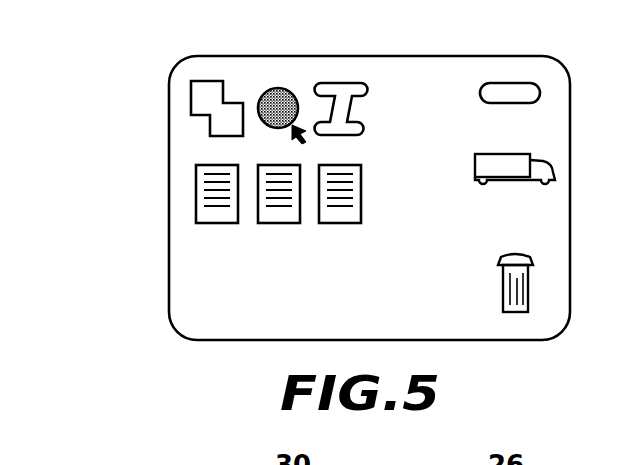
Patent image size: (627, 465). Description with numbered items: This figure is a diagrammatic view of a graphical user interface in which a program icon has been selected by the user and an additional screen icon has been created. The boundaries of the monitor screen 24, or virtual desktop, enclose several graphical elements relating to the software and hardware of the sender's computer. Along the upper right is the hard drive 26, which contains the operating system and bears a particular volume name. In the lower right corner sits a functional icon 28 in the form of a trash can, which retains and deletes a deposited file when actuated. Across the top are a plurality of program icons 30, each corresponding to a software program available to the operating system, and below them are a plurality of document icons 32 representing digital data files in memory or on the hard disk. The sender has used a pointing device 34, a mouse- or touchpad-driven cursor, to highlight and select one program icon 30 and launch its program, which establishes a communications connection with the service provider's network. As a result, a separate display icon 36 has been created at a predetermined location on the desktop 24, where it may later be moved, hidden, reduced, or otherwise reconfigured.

The monitor screen 24 is at (170, 115).
The hard drive 26 is at (510, 83).
The functional icon 28 is at (530, 288).
The program icon 30 is at (278, 88).
The document icon 32 is at (272, 250).
The pointing device 34 is at (300, 137).
The display icon 36 is at (505, 165).